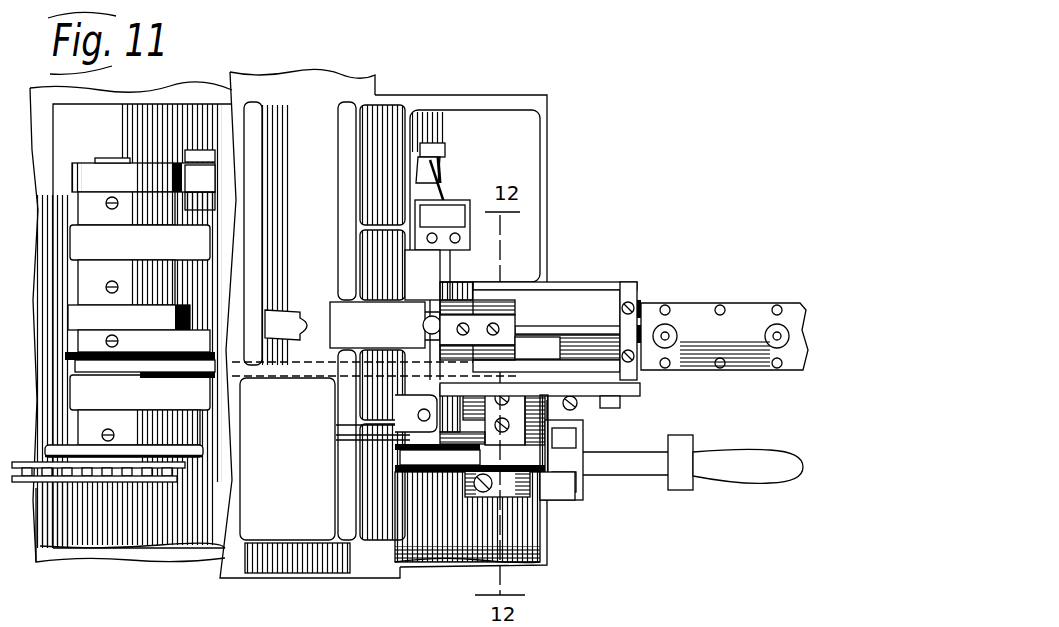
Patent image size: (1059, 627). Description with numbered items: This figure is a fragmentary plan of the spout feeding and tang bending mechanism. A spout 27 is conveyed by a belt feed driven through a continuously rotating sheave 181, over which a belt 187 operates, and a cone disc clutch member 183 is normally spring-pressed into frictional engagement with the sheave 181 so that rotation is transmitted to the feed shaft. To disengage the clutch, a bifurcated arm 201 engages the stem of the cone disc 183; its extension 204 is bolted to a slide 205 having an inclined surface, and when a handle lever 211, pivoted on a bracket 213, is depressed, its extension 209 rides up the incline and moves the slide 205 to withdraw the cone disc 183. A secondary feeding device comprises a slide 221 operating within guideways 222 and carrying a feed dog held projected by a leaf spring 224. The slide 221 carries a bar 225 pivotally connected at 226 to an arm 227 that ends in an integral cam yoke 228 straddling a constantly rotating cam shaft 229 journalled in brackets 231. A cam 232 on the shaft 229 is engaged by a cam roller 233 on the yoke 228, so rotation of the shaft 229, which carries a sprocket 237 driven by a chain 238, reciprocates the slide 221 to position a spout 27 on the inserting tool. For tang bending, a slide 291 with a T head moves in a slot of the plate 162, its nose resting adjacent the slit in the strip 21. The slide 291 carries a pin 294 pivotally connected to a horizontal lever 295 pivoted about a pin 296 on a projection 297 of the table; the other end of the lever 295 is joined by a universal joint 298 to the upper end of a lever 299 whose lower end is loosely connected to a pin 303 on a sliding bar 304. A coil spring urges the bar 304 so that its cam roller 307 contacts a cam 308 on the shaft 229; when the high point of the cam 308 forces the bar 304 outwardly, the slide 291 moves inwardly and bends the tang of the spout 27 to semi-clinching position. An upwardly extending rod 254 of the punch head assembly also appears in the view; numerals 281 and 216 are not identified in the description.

The strip 21 is at (298, 88).
The pin 303 is at (432, 150).
The lever 299 is at (435, 168).
The universal joint 298 is at (442, 232).
The horizontal lever 295 is at (425, 282).
The slide 291 is at (377, 325).
The spout 27 is at (440, 322).
The pin 294 is at (428, 338).
The cam roller 233 is at (295, 320).
The cam yoke 228 is at (240, 368).
The cam shaft 229 is at (108, 162).
The cam 308 is at (118, 175).
The sliding bar 304 is at (200, 162).
The cam roller 307 is at (205, 180).
The brackets 231 is at (140, 317).
The bar 281 is at (129, 317).
The cam 232 is at (125, 365).
The belt 187 is at (205, 460).
The cone disc clutch member 183 is at (372, 468).
The sprocket 237 is at (110, 478).
The chain 238 is at (40, 490).
The plate 162 is at (258, 528).
The projection 297 is at (345, 428).
The pin 296 is at (350, 443).
The bifurcated arm 201 is at (462, 435).
The sheave 181 is at (412, 445).
The guideways 222 is at (520, 280).
The rod 216 is at (542, 312).
The slide 221 is at (600, 320).
The bar 225 is at (625, 370).
The leaf spring 224 is at (641, 310).
The extension 204 is at (520, 398).
The pivotal connection 226 is at (605, 396).
The arm 227 is at (605, 404).
The slide 205 is at (585, 482).
The handle lever 211 is at (648, 474).
The bracket 213 is at (568, 492).
The extension 209 is at (532, 498).
The rod 254 is at (286, 626).